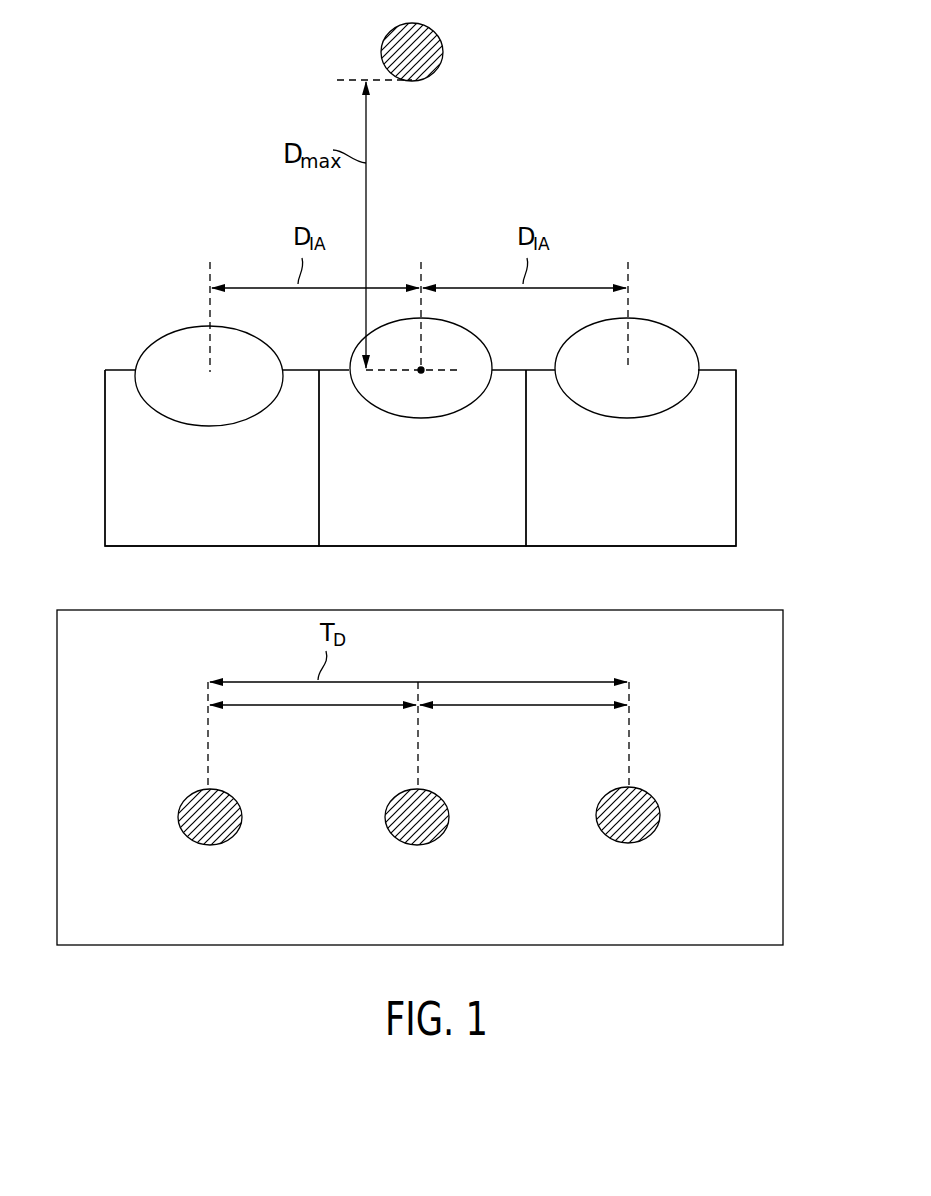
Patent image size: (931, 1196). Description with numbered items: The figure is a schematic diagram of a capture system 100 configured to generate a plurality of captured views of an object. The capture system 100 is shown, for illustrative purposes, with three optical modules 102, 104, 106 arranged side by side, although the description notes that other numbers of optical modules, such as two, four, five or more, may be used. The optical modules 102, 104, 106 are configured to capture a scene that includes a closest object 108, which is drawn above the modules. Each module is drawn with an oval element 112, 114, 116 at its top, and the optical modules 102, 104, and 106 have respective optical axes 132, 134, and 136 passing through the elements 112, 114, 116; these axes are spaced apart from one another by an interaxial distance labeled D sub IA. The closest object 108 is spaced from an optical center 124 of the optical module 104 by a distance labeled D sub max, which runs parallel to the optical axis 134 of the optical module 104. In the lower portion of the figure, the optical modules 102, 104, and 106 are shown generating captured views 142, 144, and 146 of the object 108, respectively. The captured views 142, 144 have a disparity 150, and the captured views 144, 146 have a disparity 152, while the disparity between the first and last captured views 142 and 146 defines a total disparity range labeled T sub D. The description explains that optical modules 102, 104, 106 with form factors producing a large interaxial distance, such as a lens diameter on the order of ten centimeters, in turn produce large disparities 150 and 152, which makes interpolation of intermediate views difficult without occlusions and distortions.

The capture system 100 is at (752, 401).
The optical module 102 is at (642, 546).
The optical module 104 is at (426, 546).
The optical module 106 is at (218, 546).
The closest object 108 is at (441, 44).
The first imaging area 112 is at (680, 333).
The second imaging area 114 is at (478, 338).
The third imaging area 116 is at (260, 338).
The optical center 124 is at (422, 373).
The optical axis 132 is at (630, 268).
The optical axis 134 is at (423, 262).
The optical axis 136 is at (212, 262).
The captured view 142 is at (622, 843).
The captured view 144 is at (420, 845).
The captured view 146 is at (213, 845).
The disparity 150 is at (510, 707).
The disparity 152 is at (328, 707).